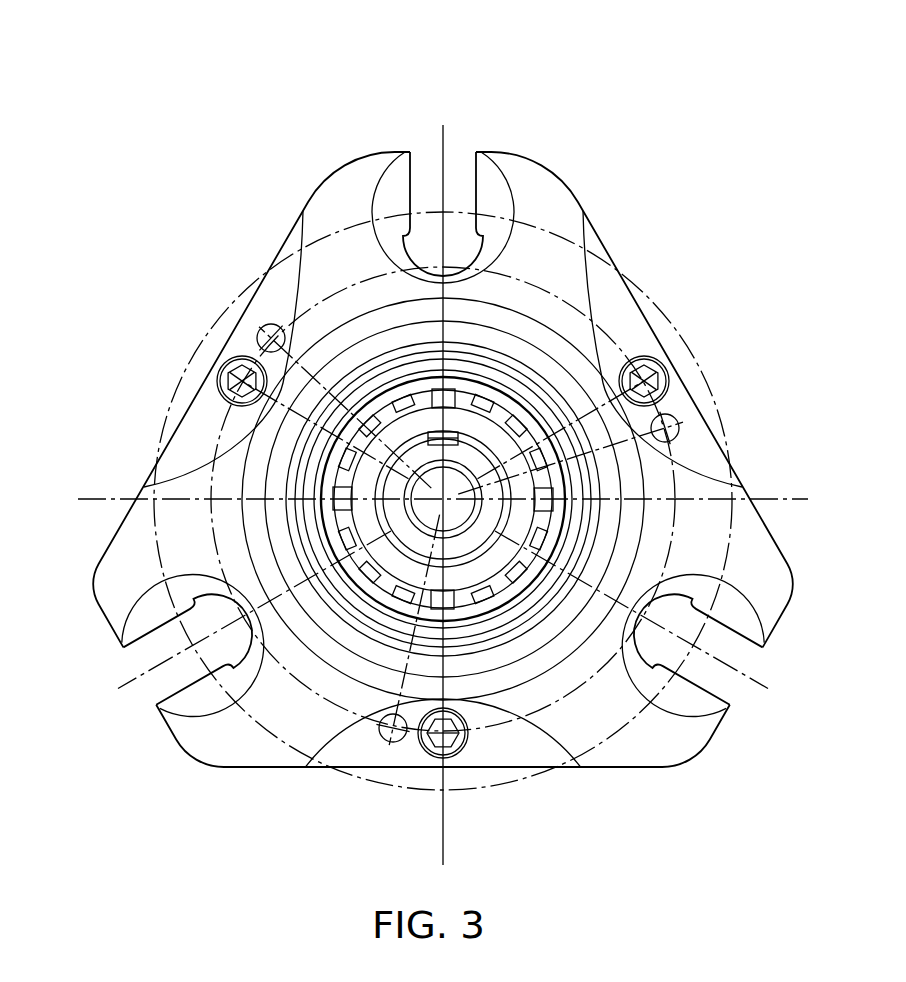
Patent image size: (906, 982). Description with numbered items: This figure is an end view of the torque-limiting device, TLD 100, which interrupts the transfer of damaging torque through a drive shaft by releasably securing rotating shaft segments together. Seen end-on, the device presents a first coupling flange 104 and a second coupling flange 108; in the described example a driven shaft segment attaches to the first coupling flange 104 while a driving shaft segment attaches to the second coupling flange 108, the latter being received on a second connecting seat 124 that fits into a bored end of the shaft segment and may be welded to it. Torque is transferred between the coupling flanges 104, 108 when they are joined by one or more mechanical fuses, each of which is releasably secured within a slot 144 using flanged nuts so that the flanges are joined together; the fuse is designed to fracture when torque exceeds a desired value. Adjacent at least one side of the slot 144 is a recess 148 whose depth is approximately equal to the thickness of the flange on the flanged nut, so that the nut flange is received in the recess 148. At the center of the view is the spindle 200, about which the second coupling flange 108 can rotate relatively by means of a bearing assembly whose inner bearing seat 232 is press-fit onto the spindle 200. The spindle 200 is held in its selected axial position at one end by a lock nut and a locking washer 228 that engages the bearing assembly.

The TLD 100 is at (567, 829).
The first coupling flange 104 is at (697, 357).
The second coupling flange 108 is at (588, 212).
The second connecting seat 124 is at (305, 487).
The slot 144 is at (495, 193).
The recess 148 is at (488, 245).
The spindle 200 is at (412, 530).
The locking washer 228 is at (378, 724).
The inner bearing seat 232 is at (262, 568).